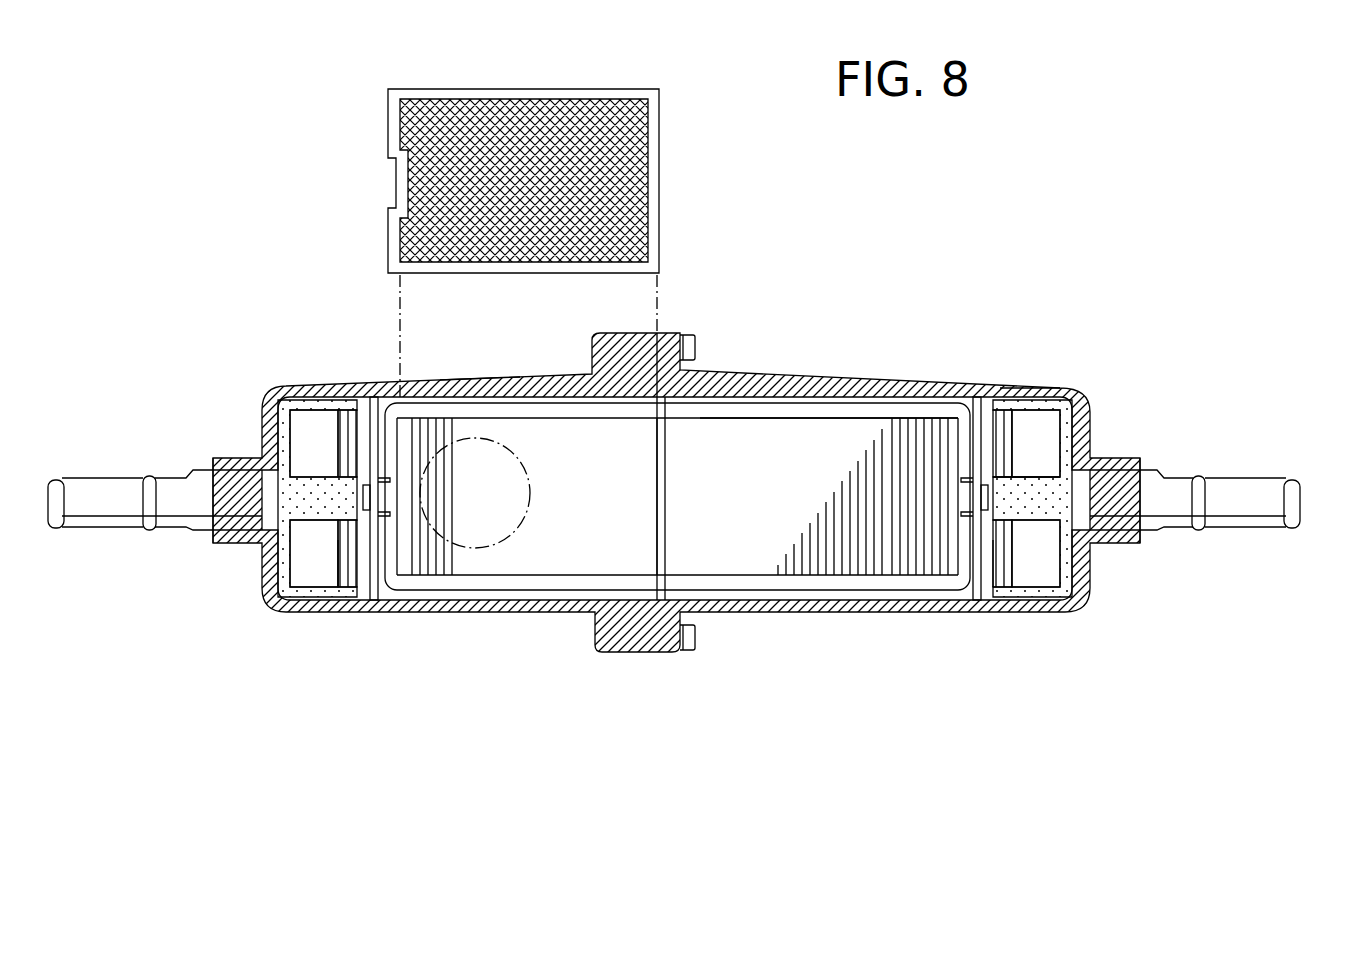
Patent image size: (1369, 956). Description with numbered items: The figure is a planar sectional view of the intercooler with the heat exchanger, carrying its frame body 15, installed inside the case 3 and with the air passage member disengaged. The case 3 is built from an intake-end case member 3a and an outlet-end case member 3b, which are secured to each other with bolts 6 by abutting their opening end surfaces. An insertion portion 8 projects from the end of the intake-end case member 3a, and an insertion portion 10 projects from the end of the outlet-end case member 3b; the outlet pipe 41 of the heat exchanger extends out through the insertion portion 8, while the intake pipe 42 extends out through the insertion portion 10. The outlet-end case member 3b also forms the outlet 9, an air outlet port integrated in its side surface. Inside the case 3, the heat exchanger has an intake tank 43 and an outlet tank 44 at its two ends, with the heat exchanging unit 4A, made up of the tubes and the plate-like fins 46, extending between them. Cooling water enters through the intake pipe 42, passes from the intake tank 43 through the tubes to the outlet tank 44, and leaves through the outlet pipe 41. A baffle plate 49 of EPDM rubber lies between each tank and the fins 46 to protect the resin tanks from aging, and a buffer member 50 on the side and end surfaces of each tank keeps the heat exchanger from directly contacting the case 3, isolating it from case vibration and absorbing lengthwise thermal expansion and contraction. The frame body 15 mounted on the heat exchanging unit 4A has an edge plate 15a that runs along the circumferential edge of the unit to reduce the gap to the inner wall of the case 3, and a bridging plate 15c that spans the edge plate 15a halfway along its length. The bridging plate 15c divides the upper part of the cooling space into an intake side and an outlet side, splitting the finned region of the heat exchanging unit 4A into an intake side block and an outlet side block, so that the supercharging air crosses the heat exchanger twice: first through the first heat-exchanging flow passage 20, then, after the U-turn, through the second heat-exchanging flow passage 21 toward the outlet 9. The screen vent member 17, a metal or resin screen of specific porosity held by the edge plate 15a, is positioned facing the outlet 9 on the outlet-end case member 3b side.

The case 3 is at (945, 378).
The intake-end case member 3a is at (1022, 388).
The outlet-end case member 3b is at (478, 380).
The bolts 6 is at (695, 345).
The insertion portion 8 is at (1115, 543).
The outlet 9 is at (510, 535).
The insertion portion 10 is at (236, 545).
The frame body 15 is at (560, 400).
The edge plate 15a is at (788, 400).
The bridging plate 15c is at (670, 540).
The screen vent member 17 is at (662, 188).
The first heat-exchanging flow passage 20 is at (759, 513).
The second heat-exchanging flow passage 21 is at (616, 513).
The outlet pipe 41 is at (1252, 510).
The intake pipe 42 is at (100, 510).
The intake tank 43 is at (318, 438).
The outlet tank 44 is at (1045, 580).
The fins 46 is at (868, 435).
The baffle plate 49 is at (360, 578).
The buffer member 50 is at (1032, 475).
The heat exchanging unit 4A is at (860, 572).